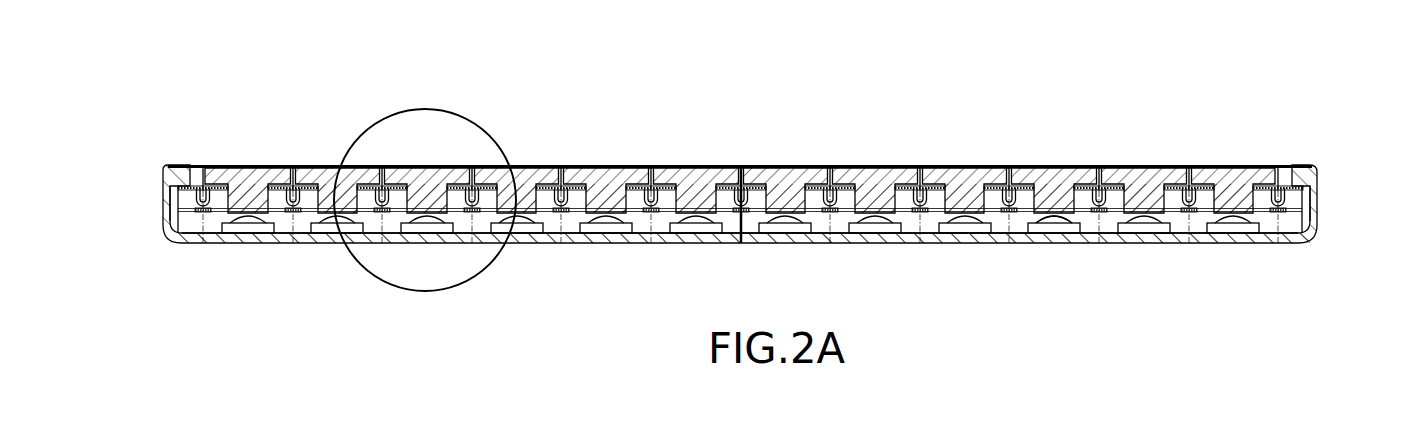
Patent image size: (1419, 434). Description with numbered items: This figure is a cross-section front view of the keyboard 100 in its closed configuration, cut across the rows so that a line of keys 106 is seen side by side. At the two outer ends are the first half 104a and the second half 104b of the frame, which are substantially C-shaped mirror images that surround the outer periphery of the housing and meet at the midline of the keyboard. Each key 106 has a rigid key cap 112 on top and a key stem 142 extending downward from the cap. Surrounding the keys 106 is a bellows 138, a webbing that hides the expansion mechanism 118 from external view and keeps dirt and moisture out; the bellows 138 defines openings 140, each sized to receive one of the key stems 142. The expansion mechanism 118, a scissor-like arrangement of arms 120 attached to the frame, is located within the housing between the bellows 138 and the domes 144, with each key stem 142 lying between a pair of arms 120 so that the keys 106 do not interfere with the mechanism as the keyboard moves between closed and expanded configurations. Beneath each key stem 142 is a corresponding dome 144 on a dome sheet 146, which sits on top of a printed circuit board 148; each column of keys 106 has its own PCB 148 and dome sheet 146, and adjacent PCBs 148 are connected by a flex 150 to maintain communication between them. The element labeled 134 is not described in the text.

The keyboard 100 is at (188, 125).
The first half of the frame 104a is at (163, 222).
The second half of the frame 104b is at (1312, 178).
The key 106 is at (782, 155).
The key cap 112 is at (873, 175).
The expansion mechanism 118 is at (1272, 222).
The arm 120 is at (815, 212).
The solder pad 134 is at (1013, 213).
The bellows 138 is at (1112, 187).
The opening 140 is at (1125, 212).
The key stem 142 is at (883, 205).
The dome 144 is at (1052, 217).
The dome sheet 146 is at (1033, 225).
The printed circuit board 148 is at (1047, 233).
The flex 150 is at (1178, 233).